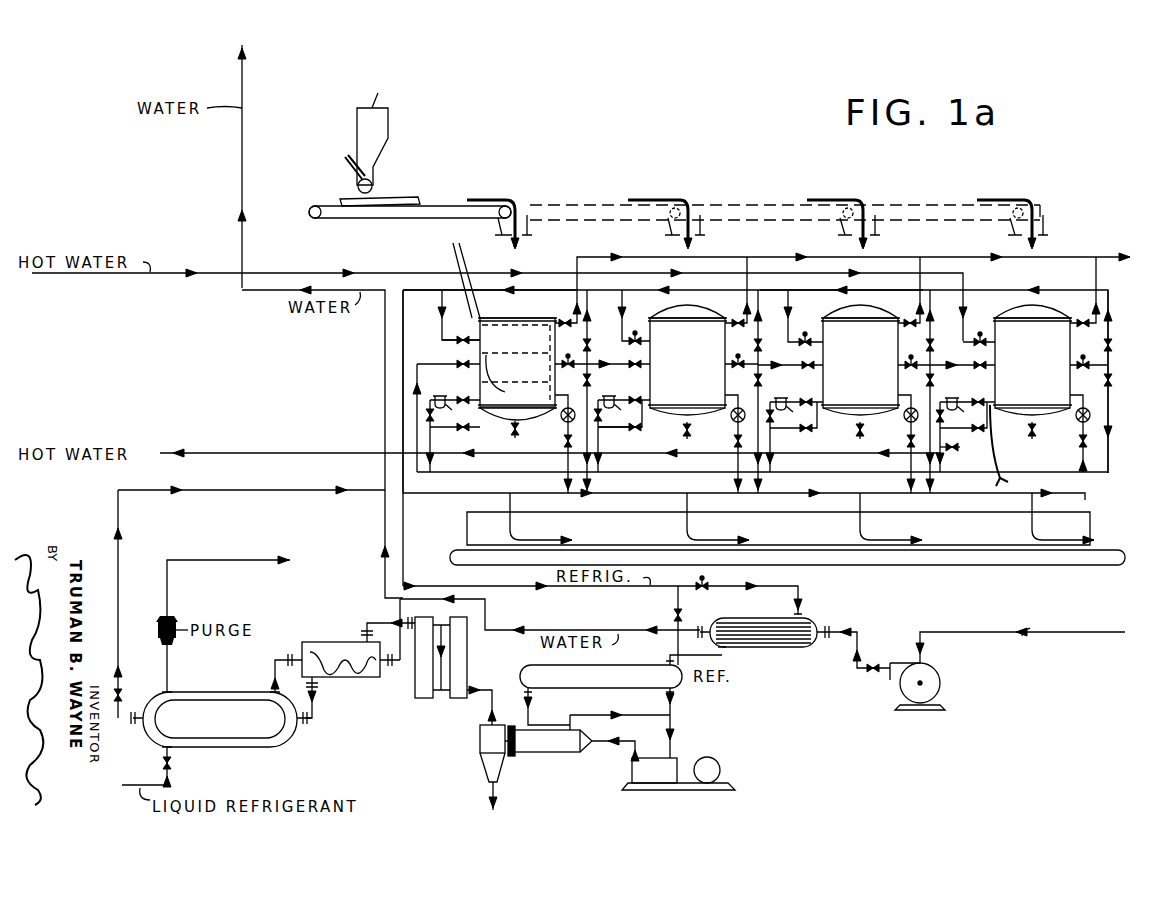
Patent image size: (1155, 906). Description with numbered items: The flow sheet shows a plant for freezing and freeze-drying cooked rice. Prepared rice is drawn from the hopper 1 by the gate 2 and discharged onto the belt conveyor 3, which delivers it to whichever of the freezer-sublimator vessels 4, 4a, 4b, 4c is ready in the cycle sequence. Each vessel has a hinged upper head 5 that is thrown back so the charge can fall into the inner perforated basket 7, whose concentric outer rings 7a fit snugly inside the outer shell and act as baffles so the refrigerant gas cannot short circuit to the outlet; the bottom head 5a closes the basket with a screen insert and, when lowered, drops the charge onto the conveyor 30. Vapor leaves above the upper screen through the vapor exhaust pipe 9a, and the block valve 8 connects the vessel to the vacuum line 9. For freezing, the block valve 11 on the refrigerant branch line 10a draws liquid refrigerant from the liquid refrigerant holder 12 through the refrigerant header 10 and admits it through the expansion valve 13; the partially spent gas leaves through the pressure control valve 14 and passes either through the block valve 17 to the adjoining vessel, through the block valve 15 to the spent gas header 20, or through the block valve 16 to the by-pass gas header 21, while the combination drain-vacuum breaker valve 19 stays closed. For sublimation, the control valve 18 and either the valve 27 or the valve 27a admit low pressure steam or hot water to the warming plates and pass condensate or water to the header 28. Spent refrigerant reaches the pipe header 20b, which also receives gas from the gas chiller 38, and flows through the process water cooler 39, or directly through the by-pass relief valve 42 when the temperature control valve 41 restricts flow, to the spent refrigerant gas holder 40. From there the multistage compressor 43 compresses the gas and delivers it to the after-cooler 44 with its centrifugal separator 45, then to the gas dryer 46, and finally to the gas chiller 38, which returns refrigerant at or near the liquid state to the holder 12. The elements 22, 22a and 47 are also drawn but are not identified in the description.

The hopper 1 is at (357, 130).
The gate 2 is at (356, 189).
The belt conveyor 3 is at (440, 206).
The freezer-sublimator vessel 4 is at (517, 363).
The freezer-sublimator vessel 4a is at (687, 360).
The freezer-sublimator vessel 4b is at (860, 360).
The freezer-sublimator vessel 4c is at (1032, 360).
The hinged upper head 5 is at (452, 247).
The bottom head 5a is at (498, 420).
The inner perforated basket 7 is at (485, 343).
The concentric outer rings 7a is at (536, 384).
The block valve 8 is at (566, 321).
The vacuum line 9 is at (735, 253).
The vapor exhaust pipe 9a is at (572, 289).
The refrigerant header 10 is at (643, 494).
The refrigerant branch line 10a is at (556, 489).
The liquid refrigerant block valve 11 is at (562, 440).
The liquid refrigerant holder 12 is at (221, 719).
The expansion valve 13 is at (561, 420).
The pressure control valve 14 is at (831, 375).
The block valve 15 is at (1116, 347).
The block valve 16 is at (762, 381).
The block valve 17 is at (462, 366).
The control valve 18 is at (460, 332).
The combination drain-vacuum breaker valve 19 is at (690, 433).
The spent gas header 20 is at (730, 289).
The pipe header 20b is at (620, 594).
The by-pass gas header 21 is at (718, 477).
The hot water supply line 22 is at (302, 272).
The hot water branch 22a is at (458, 337).
The valve 27 is at (710, 424).
The valve 27a is at (655, 430).
The header 28 is at (328, 450).
The conveyor 30 is at (862, 563).
The gas chiller 38 is at (334, 648).
The process water cooler 39 is at (758, 648).
The spent refrigerant gas holder 40 is at (621, 706).
The temperature control valve 41 is at (705, 589).
The by-pass relief valve 42 is at (673, 615).
The multistage compressor 43 is at (678, 773).
The after-cooler 44 is at (548, 757).
The centrifugal separator 45 is at (480, 741).
The gas dryer 46 is at (468, 655).
The water pump 47 is at (936, 681).